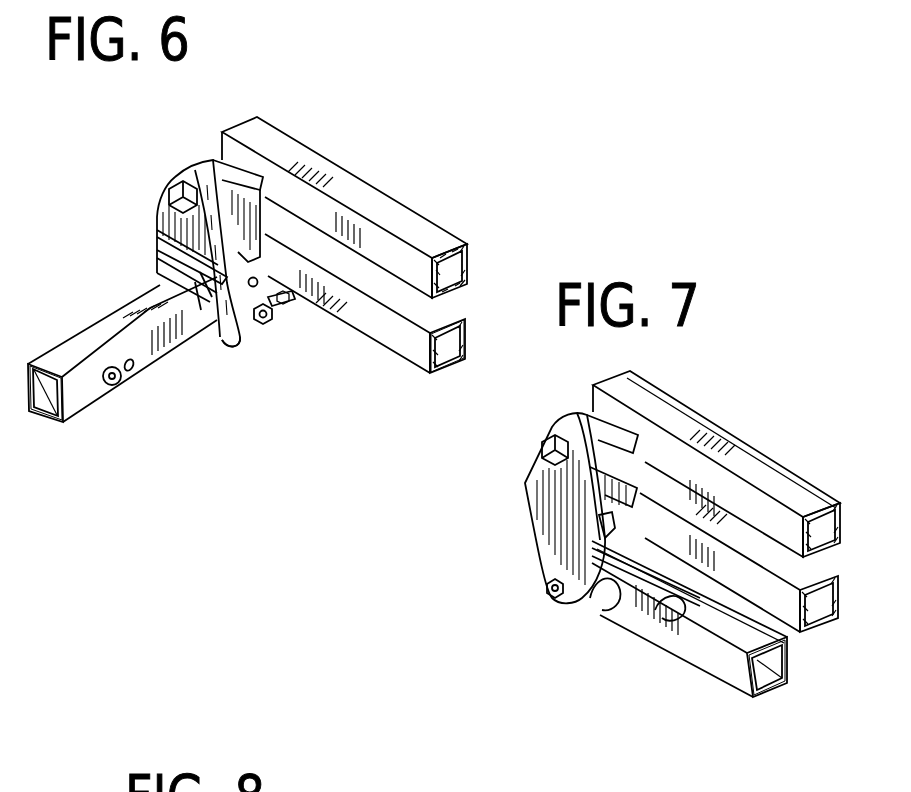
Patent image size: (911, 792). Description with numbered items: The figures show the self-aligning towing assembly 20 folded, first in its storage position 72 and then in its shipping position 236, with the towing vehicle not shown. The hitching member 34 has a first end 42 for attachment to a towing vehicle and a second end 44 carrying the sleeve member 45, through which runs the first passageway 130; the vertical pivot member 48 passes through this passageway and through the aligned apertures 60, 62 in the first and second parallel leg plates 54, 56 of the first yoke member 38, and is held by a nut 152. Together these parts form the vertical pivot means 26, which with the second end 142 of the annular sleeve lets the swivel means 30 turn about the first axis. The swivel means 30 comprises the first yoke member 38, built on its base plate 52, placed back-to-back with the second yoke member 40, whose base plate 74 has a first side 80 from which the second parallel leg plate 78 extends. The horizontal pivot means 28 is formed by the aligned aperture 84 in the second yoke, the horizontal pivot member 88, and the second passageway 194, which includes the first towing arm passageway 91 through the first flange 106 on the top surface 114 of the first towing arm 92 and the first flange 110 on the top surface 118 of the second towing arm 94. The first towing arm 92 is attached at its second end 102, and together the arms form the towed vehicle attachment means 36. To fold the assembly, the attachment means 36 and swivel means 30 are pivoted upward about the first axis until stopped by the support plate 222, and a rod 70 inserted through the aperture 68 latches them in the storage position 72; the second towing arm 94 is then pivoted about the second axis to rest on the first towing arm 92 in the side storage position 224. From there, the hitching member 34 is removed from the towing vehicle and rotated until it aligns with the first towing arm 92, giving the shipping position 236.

In FIG. 6, the self-aligning towing assembly 20 is at (275, 78).
In FIG. 7, the self-aligning towing assembly 20 is at (764, 386).
In FIG. 6, the vertical pivot means 26 is at (296, 361).
In FIG. 7, the vertical pivot means 26 is at (521, 672).
In FIG. 6, the horizontal pivot means 28 is at (105, 165).
In FIG. 7, the horizontal pivot means 28 is at (498, 472).
In FIG. 6, the swivel means 30 is at (80, 228).
In FIG. 7, the swivel means 30 is at (487, 550).
In FIG. 6, the hitching member 34 is at (60, 356).
In FIG. 7, the hitching member 34 is at (733, 662).
In FIG. 6, the towed vehicle attachment means 36 is at (383, 122).
In FIG. 7, the towed vehicle attachment means 36 is at (833, 560).
In FIG. 6, the first yoke member 38 is at (158, 262).
In FIG. 7, the first yoke member 38 is at (548, 552).
In FIG. 6, the second yoke member 40 is at (176, 185).
In FIG. 7, the second yoke member 40 is at (575, 510).
In FIG. 6, the first end 42 is at (92, 417).
In FIG. 7, the first end 42 is at (752, 702).
In FIG. 6, the second end 44 is at (204, 384).
In FIG. 7, the sleeve member 45 is at (608, 585).
In FIG. 6, the vertical pivot member 48 is at (266, 319).
In FIG. 7, the vertical pivot member 48 is at (548, 597).
In FIG. 6, the base plate 52 is at (160, 248).
In FIG. 6, the first parallel leg plate 54 is at (213, 284).
In FIG. 7, the first parallel leg plate 54 is at (700, 567).
In FIG. 6, the second parallel leg plate 56 is at (158, 277).
In FIG. 7, the second parallel leg plate 56 is at (592, 600).
In FIG. 6, the aligned aperture 60 is at (240, 339).
In FIG. 7, the aligned aperture 62 is at (552, 600).
In FIG. 6, the aperture 68 is at (285, 303).
In FIG. 7, the rod 70 is at (556, 540).
In FIG. 6, the storage position 72 is at (196, 440).
In FIG. 6, the base plate 74 is at (160, 234).
In FIG. 6, the second parallel leg plate 78 is at (163, 220).
In FIG. 7, the first side 80 is at (598, 520).
In FIG. 6, the aligned aperture 84 is at (142, 170).
In FIG. 7, the aligned aperture 84 is at (515, 471).
In FIG. 6, the horizontal pivot member 88 is at (170, 205).
In FIG. 7, the horizontal pivot member 88 is at (544, 455).
In FIG. 7, the first towing arm passageway 91 is at (553, 411).
In FIG. 6, the first towing arm 92 is at (393, 331).
In FIG. 6, the second towing arm 94 is at (438, 246).
In FIG. 6, the second end 102 is at (278, 110).
In FIG. 6, the first flange 106 is at (248, 207).
In FIG. 7, the first flange 106 is at (613, 502).
In FIG. 6, the first flange 110 is at (218, 158).
In FIG. 7, the first flange 110 is at (612, 434).
In FIG. 6, the top surface 114 is at (423, 353).
In FIG. 6, the top surface 118 is at (372, 238).
In FIG. 7, the first passageway 130 is at (520, 584).
In FIG. 7, the second end 142 is at (590, 614).
In FIG. 6, the nut 152 is at (248, 335).
In FIG. 7, the second passageway 194 is at (562, 406).
In FIG. 6, the support plate 222 is at (203, 283).
In FIG. 7, the support plate 222 is at (690, 595).
In FIG. 6, the side storage position 224 is at (237, 419).
In FIG. 7, the shipping position 236 is at (535, 694).